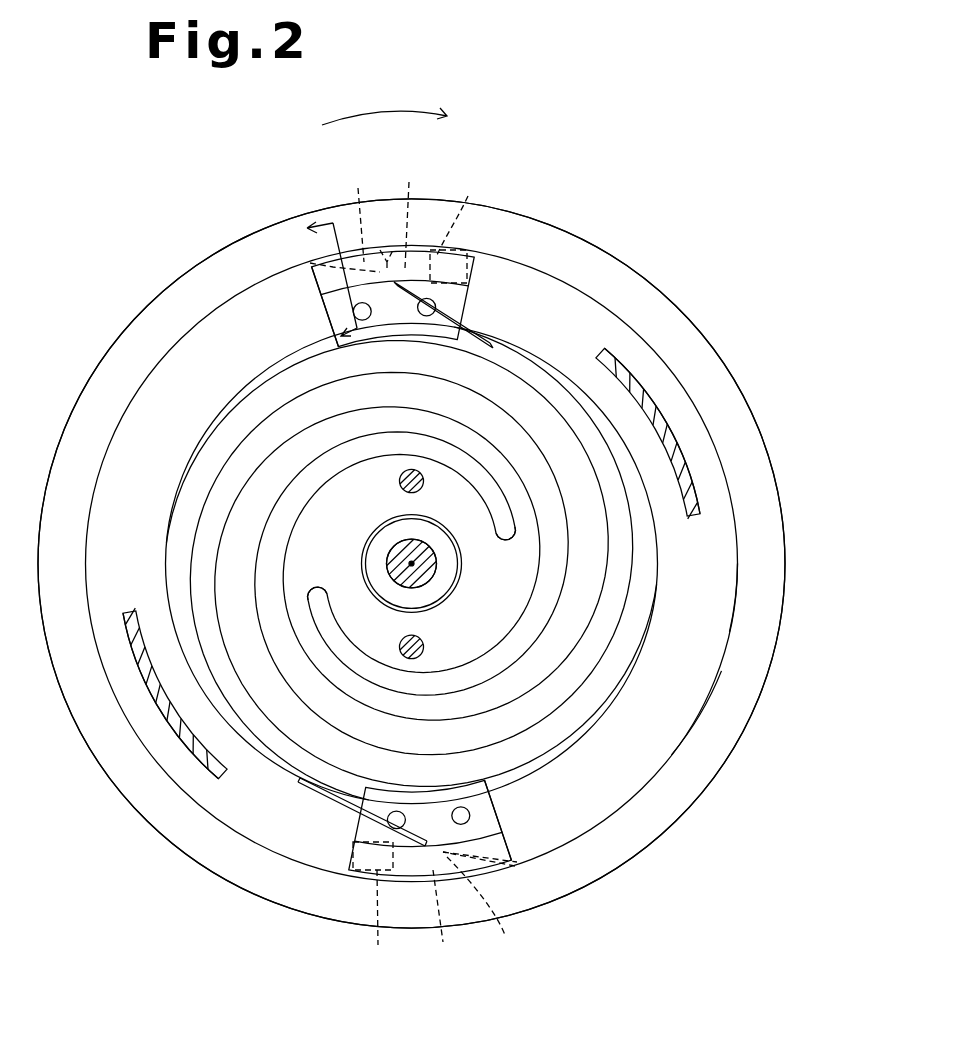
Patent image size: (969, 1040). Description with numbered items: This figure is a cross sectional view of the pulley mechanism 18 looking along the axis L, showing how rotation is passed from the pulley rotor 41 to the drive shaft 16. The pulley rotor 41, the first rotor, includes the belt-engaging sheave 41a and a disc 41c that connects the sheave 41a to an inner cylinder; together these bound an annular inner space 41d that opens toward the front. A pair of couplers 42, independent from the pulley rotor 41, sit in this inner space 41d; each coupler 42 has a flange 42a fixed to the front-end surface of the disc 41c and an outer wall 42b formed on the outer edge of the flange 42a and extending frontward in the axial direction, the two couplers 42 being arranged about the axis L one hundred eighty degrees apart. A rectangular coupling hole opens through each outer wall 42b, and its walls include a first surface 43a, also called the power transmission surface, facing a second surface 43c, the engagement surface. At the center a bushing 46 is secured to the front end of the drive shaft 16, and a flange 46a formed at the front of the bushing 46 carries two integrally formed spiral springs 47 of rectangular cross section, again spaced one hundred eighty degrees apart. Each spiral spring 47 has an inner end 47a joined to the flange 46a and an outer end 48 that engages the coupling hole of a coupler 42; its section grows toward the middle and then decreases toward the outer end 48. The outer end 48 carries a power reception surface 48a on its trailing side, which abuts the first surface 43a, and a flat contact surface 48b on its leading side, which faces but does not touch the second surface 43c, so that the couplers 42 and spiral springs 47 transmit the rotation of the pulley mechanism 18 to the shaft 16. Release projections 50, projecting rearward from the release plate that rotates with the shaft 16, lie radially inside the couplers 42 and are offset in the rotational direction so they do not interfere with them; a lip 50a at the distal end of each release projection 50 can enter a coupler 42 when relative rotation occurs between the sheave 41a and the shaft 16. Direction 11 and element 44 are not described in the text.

The rotation direction 11 is at (322, 295).
The drive shaft 16 is at (440, 597).
The pulley mechanism 18 is at (176, 225).
The pulley rotor 41 is at (786, 562).
The sheave 41a is at (765, 643).
The disc 41c is at (682, 720).
The annular inner space 41d is at (712, 625).
The coupler 42 is at (322, 306).
The flange 42a is at (333, 345).
The outer wall 42b is at (470, 251).
The first surface 43a is at (434, 554).
The second surface 43c is at (426, 565).
The spring 44 is at (310, 263).
The bushing 46 is at (537, 606).
The flange 46a is at (380, 475).
The spiral spring 47 is at (243, 391).
The inner end 47a is at (520, 531).
The outer end 48 is at (467, 297).
The power reception surface 48a is at (442, 553).
The contact surface 48b is at (467, 275).
The release projection 50 is at (697, 518).
The lip 50a is at (613, 352).
The axis L is at (404, 581).